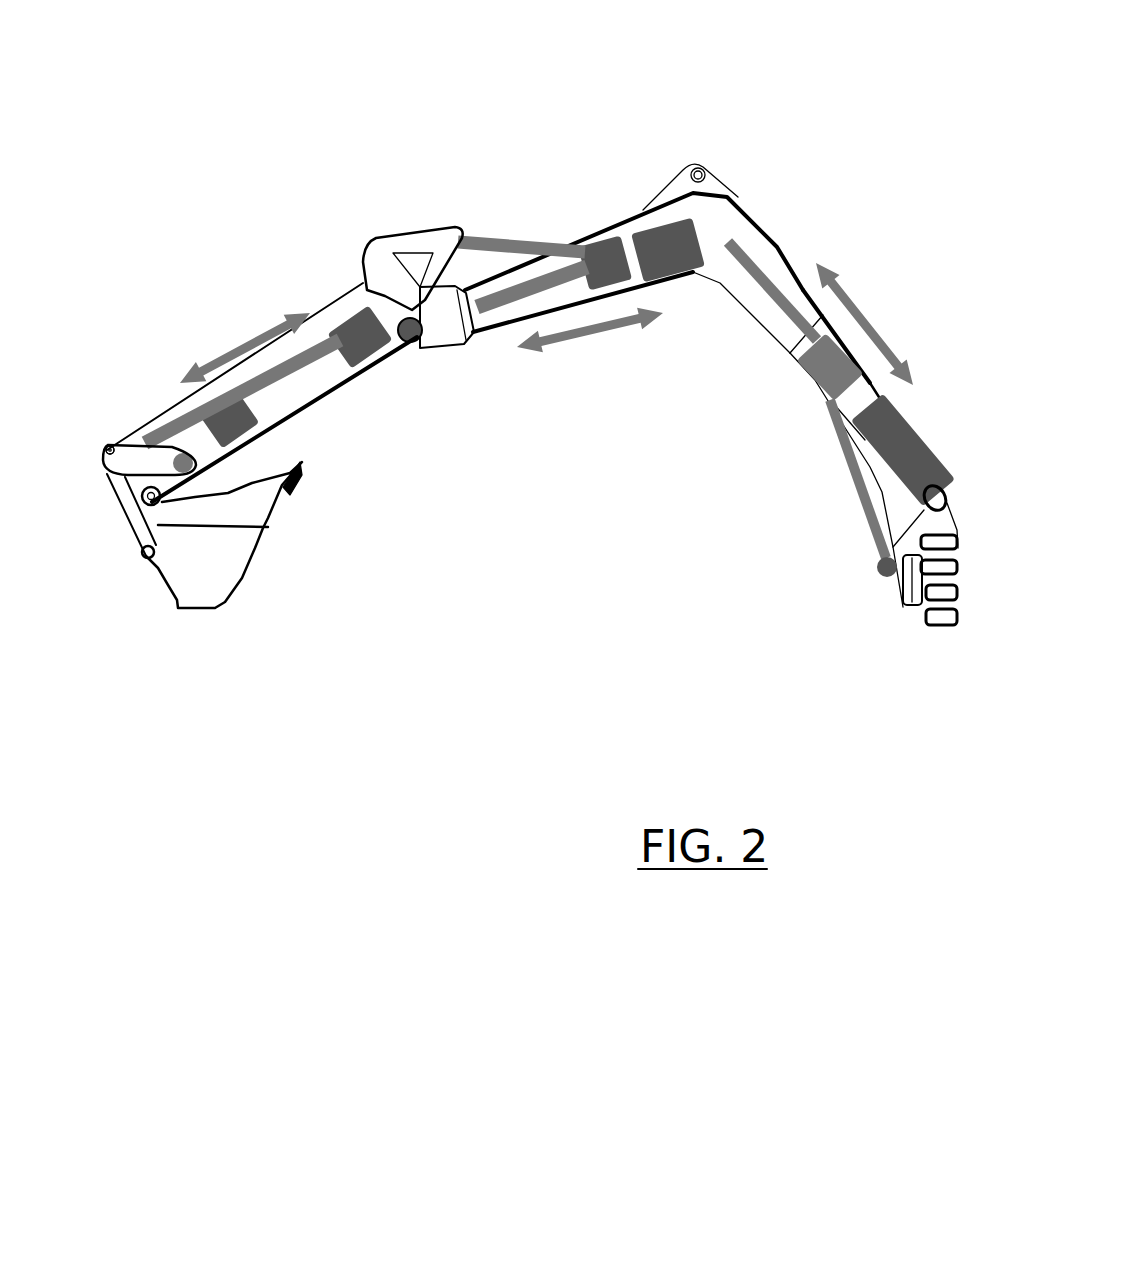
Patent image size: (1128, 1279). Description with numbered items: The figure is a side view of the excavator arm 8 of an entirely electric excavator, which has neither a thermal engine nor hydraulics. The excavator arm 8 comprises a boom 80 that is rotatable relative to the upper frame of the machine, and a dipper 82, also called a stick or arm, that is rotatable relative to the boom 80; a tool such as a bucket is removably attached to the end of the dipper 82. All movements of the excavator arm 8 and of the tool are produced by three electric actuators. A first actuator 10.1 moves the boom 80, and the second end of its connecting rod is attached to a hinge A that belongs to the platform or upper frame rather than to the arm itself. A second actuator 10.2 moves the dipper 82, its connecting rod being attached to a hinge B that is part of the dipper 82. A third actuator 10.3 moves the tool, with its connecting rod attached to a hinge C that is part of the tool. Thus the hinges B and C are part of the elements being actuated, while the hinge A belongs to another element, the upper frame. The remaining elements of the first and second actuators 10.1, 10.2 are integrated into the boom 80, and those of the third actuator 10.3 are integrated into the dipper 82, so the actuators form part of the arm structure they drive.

The excavator arm 8 is at (435, 750).
The first actuator 10.1 is at (673, 394).
The second actuator 10.2 is at (445, 207).
The third actuator 10.3 is at (88, 420).
The boom 80 is at (743, 222).
The dipper 82 is at (297, 402).
The hinge A is at (879, 582).
The hinge B is at (457, 226).
The hinge C is at (103, 473).